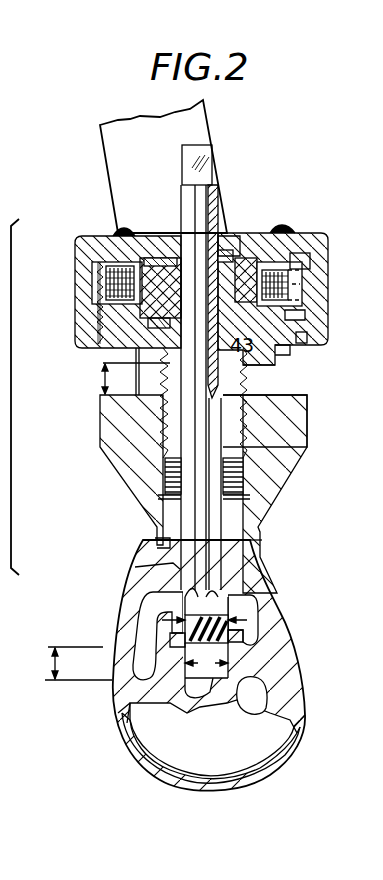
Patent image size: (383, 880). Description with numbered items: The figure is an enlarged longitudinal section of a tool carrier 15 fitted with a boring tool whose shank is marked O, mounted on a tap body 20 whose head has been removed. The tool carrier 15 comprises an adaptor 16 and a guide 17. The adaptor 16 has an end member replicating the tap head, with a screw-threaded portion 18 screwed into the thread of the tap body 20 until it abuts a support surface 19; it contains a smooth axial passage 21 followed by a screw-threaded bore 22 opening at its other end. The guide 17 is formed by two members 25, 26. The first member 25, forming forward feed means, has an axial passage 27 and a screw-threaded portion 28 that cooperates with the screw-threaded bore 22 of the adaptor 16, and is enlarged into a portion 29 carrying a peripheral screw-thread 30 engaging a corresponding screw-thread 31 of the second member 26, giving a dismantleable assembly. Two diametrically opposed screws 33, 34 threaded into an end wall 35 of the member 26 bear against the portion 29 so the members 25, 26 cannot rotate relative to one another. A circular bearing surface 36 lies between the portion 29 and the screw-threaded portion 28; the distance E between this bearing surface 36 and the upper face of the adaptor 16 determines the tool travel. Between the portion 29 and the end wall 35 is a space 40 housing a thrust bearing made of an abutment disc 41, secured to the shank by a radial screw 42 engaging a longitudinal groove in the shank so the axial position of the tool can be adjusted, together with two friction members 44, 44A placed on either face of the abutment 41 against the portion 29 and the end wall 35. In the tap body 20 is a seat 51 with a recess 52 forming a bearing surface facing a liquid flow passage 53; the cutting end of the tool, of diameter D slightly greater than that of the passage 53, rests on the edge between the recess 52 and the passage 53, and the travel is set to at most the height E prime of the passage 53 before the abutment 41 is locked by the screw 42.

The tool carrier 15 is at (12, 397).
The adaptor 16 is at (112, 474).
The guide 17 is at (82, 352).
The screw-threaded portion 18 is at (135, 567).
The support surface 19 is at (152, 545).
The tap body 20 is at (138, 596).
The smooth axial passage 21 is at (258, 540).
The screw-threaded bore 22 is at (283, 487).
The first member forming forward feed means 25 is at (280, 362).
The second member 26 is at (320, 230).
The axial passage 27 is at (292, 422).
The screw-threaded portion 28 is at (300, 458).
The enlarged portion 29 is at (305, 322).
The screw-thread 30 is at (292, 340).
The corresponding screw-thread 31 is at (302, 300).
The screw 33 is at (123, 232).
The screw 34 is at (282, 234).
The end wall 35 is at (238, 236).
The circular bearing surface 36 is at (262, 362).
The space 40 is at (305, 262).
The abutment disc 41 is at (95, 293).
The radial screw 42 is at (245, 250).
The friction member 44 is at (163, 240).
The friction member 44A is at (155, 336).
The seat 51 is at (135, 688).
The recess 52 is at (235, 636).
The liquid flow passage 53 is at (268, 668).